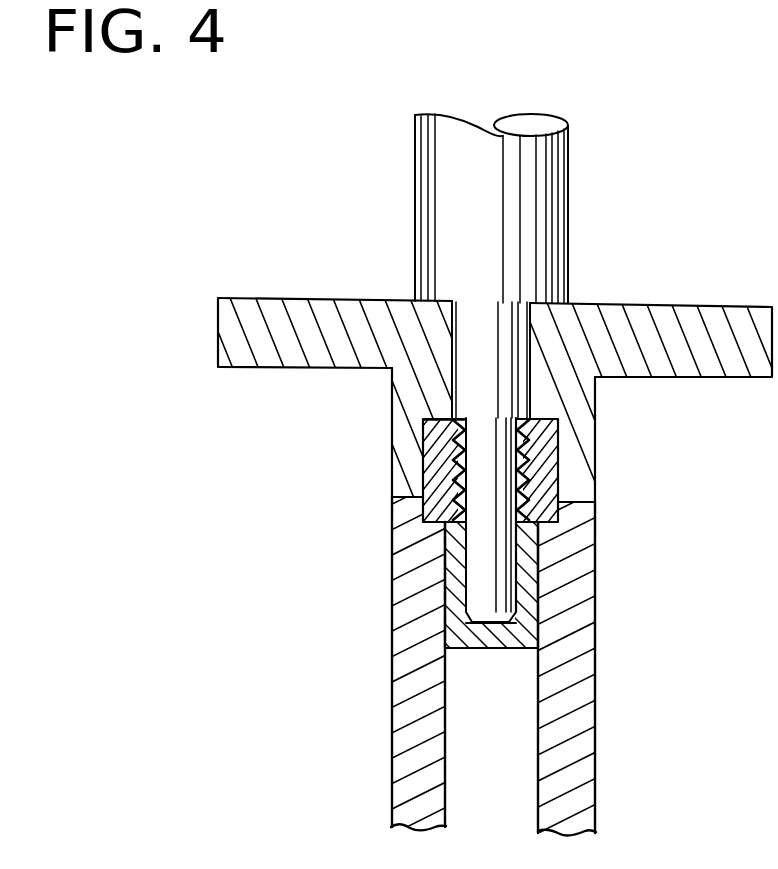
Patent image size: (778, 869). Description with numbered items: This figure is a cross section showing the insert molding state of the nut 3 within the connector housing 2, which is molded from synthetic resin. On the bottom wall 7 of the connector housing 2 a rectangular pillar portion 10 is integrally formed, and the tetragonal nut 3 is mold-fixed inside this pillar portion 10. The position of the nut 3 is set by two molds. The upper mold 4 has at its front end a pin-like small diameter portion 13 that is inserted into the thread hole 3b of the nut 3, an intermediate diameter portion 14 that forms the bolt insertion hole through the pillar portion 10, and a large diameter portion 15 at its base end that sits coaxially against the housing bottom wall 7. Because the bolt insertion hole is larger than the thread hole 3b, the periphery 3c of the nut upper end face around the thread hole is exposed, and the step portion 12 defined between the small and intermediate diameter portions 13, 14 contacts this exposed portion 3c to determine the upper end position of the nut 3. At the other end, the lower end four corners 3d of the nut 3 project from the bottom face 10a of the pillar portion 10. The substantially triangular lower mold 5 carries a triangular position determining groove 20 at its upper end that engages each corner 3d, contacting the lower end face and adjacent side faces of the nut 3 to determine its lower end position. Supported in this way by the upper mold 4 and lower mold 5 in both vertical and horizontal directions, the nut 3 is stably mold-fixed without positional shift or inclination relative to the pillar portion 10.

The connector housing 2 is at (685, 302).
The nut 3 is at (566, 424).
The thread hole 3b is at (512, 471).
The periphery of the nut upper end face 3c is at (528, 421).
The lower end four corners of nut 3d is at (550, 535).
The upper mold 4 is at (574, 197).
The lower mold 5 is at (597, 688).
The bottom wall 7 is at (455, 360).
The pillar portion 10 is at (398, 468).
The bottom face of pillar portion 10a is at (416, 499).
The step portion 12 is at (452, 422).
The small diameter portion 13 is at (500, 580).
The intermediate diameter portion 14 is at (512, 341).
The large diameter portion 15 is at (428, 194).
The position determining groove 20 is at (440, 528).